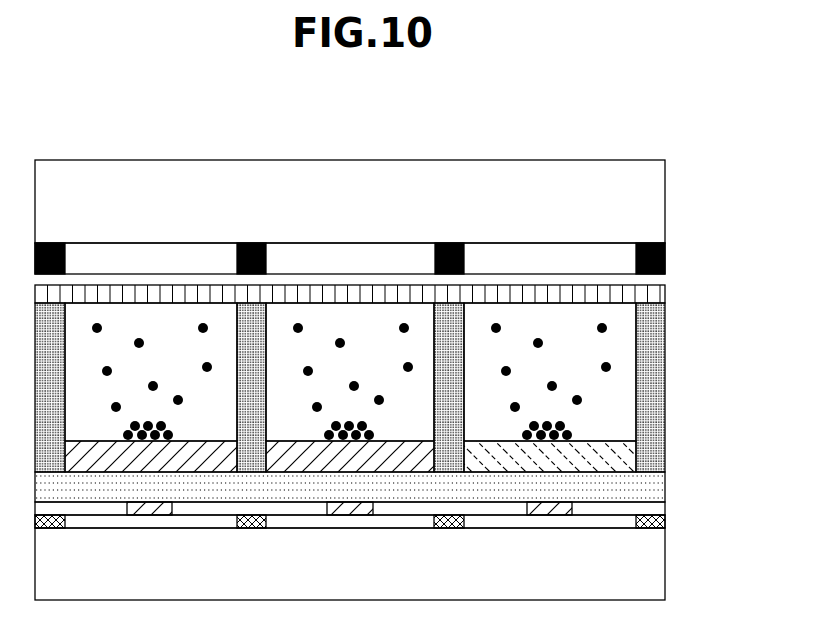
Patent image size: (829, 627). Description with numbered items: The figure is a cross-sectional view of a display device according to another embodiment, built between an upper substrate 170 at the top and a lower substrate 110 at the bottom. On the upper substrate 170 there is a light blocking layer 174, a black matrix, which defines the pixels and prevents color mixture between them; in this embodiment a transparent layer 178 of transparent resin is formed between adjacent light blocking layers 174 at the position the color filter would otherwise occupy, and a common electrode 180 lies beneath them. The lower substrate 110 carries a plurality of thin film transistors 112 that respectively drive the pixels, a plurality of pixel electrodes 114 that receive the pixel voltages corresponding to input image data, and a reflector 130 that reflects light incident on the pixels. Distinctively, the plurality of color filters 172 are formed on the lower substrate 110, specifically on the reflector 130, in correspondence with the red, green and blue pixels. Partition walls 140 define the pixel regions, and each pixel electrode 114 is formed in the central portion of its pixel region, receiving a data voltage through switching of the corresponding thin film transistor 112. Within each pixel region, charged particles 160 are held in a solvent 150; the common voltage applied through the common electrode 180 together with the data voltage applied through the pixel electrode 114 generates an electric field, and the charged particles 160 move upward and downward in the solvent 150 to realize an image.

The lower substrate 110 is at (665, 568).
The thin film transistor 112 is at (662, 522).
The pixel electrode 114 is at (348, 508).
The reflector 130 is at (652, 488).
The partition wall 140 is at (652, 415).
The solvent 150 is at (617, 394).
The charged particles 160 is at (606, 368).
The upper substrate 170 is at (665, 203).
The color filter 172 is at (610, 459).
The light blocking layer 174 is at (449, 242).
The transparent layer 178 is at (378, 252).
The common electrode 180 is at (645, 295).